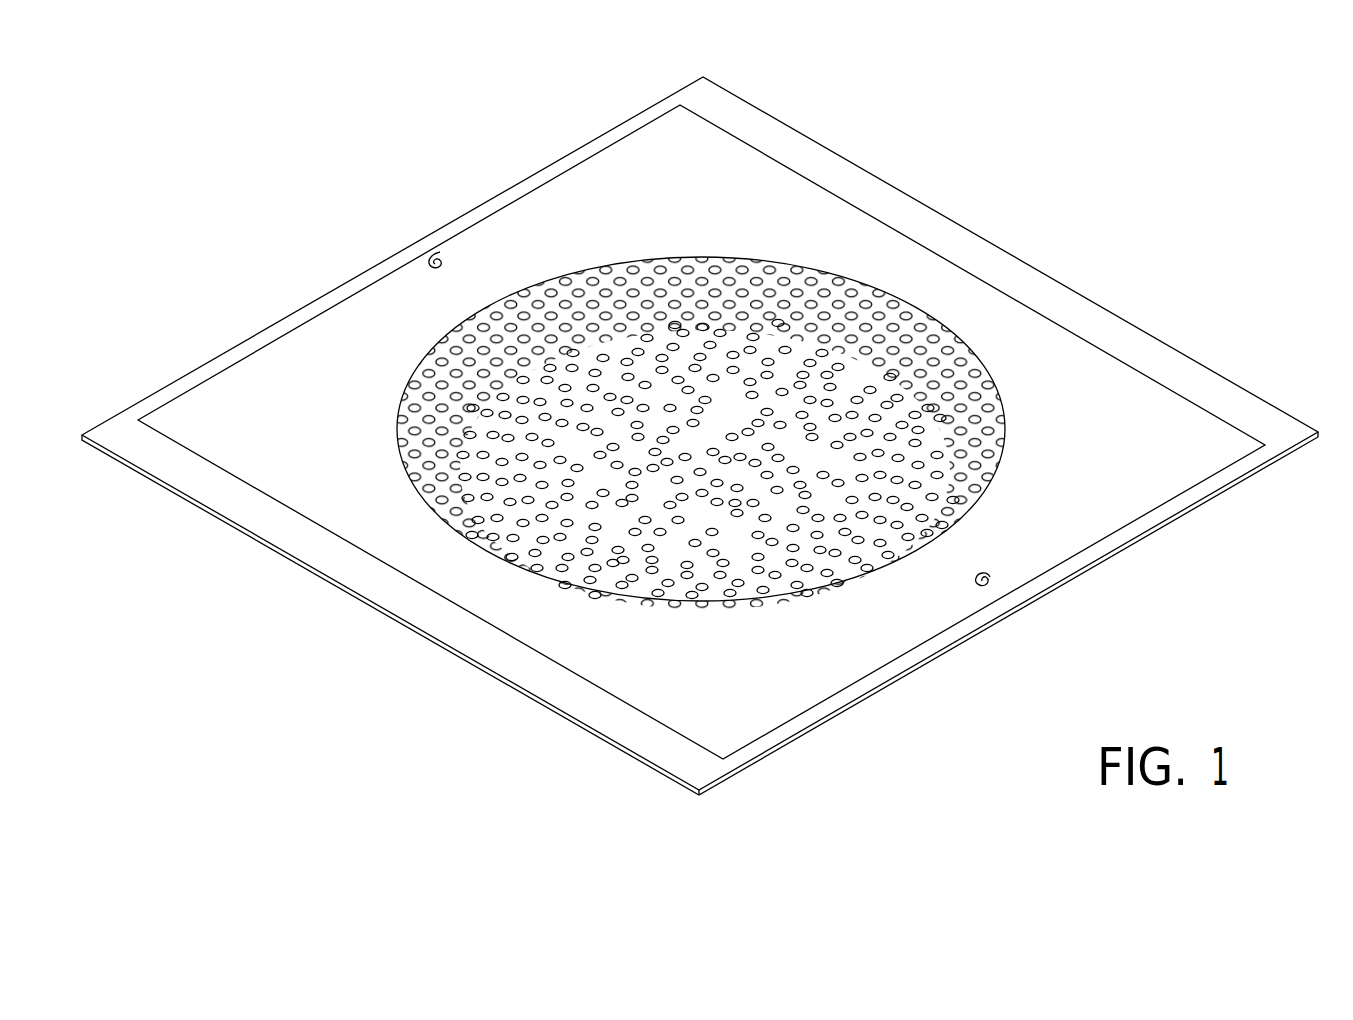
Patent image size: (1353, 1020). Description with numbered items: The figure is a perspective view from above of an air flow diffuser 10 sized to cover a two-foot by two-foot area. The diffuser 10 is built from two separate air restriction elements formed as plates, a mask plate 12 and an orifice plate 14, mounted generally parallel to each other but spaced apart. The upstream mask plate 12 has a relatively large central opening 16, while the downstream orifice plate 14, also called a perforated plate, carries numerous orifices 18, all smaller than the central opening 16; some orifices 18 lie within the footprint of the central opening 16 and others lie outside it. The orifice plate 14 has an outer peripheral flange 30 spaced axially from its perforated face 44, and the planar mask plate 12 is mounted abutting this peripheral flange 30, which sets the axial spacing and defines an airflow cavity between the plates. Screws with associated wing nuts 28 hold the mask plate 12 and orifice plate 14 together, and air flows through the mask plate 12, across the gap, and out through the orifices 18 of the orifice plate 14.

The air flow diffuser 10 is at (700, 433).
The mask plate 12 is at (733, 177).
The orifice plate 14 is at (700, 436).
The central opening 16 is at (768, 345).
The orifices 18 is at (850, 437).
The wing nuts 28 is at (440, 252).
The peripheral flange 30 is at (1163, 365).
The perforated face 44 is at (722, 398).